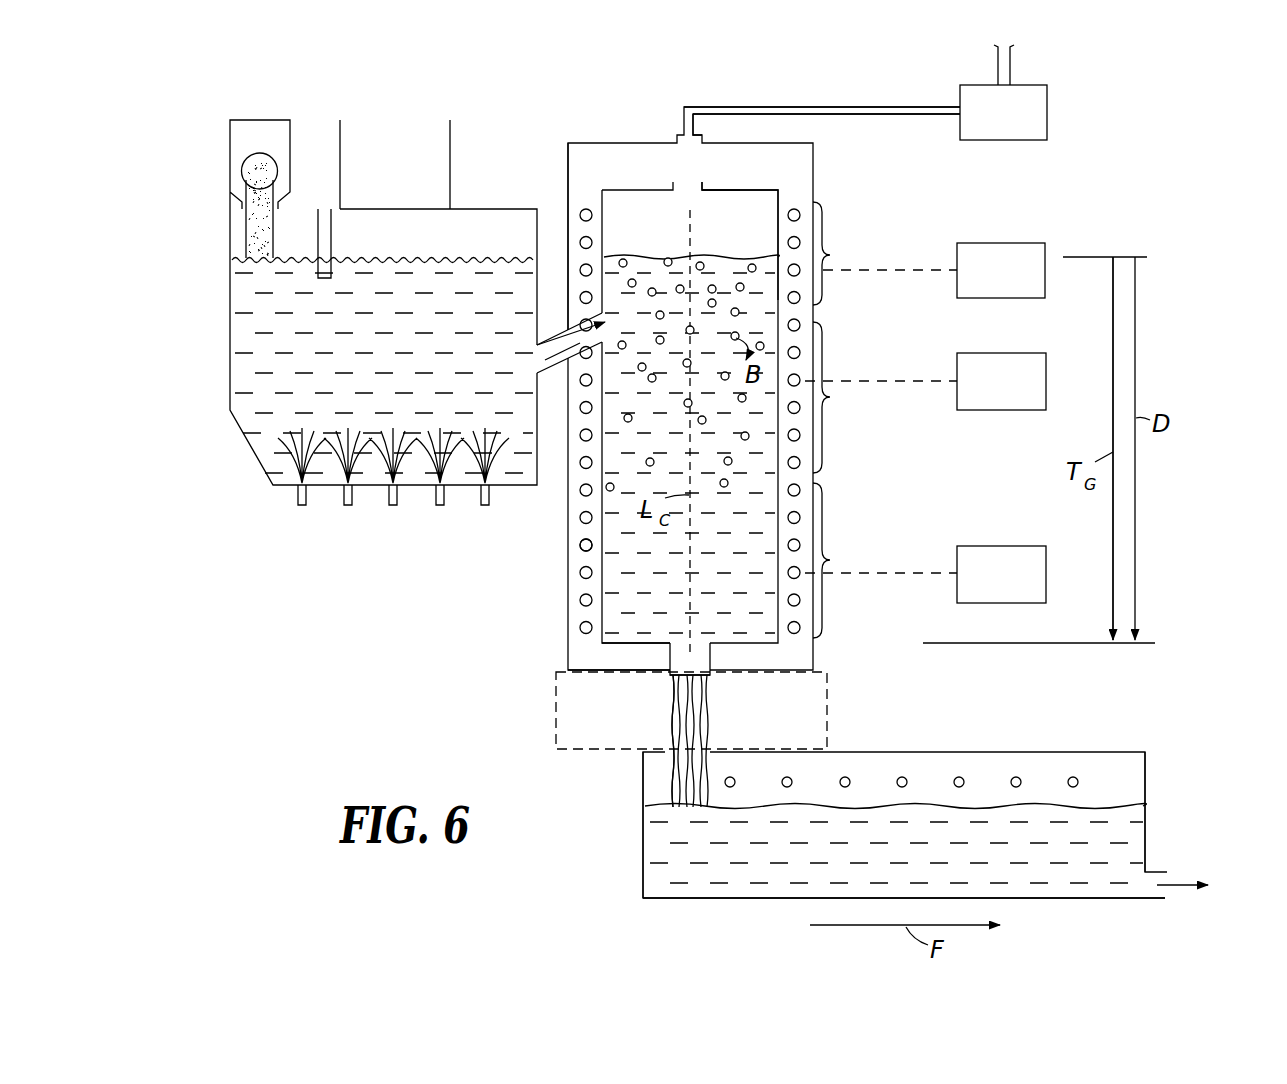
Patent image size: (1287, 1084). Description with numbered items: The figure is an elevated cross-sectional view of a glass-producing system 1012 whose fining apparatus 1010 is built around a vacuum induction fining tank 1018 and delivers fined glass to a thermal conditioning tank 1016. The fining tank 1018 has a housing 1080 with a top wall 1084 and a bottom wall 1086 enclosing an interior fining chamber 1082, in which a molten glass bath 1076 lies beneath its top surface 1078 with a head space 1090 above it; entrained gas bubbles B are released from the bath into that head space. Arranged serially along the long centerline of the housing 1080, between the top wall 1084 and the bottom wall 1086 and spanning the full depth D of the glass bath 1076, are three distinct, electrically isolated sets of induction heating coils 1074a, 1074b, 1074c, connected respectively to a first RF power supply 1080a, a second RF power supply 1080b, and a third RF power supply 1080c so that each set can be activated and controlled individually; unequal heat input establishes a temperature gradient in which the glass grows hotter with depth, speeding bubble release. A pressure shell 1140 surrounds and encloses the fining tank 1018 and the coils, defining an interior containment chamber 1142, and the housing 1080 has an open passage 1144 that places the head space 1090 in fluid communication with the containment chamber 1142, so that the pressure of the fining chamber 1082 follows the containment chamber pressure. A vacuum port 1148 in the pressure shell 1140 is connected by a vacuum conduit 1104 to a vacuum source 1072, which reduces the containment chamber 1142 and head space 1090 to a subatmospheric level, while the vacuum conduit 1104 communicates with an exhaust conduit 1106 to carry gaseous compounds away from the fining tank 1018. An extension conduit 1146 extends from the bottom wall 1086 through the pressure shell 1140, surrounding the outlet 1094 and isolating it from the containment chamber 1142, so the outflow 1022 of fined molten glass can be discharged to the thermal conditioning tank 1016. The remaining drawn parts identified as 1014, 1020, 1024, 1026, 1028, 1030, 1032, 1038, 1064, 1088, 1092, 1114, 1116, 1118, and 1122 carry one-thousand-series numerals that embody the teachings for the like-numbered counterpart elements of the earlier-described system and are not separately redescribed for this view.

The fining apparatus 1010 is at (729, 370).
The feed hopper 1012 is at (316, 86).
The first melting tank 1014 is at (213, 257).
The thermal conditioning tank 1016 is at (1017, 748).
The fining tank 1018 is at (785, 188).
The molten glass flow 1020 is at (582, 342).
The outflow 1022 is at (710, 713).
The outlet region 1024 is at (624, 707).
The transfer region 1026 is at (828, 736).
The glass outflow 1028 is at (1178, 886).
The raw material feed 1030 is at (257, 227).
The spout conduit 1032 is at (557, 350).
The molten glass in first tank 1038 is at (412, 366).
The burners 1064 is at (300, 502).
The vacuum source 1072 is at (1032, 124).
The first set of one or more induction heating coils 1074a is at (830, 255).
The second set of one or more induction heating coils 1074b is at (830, 397).
The third set of one or more induction heating coils 1074c is at (830, 560).
The molten glass bath 1076 is at (756, 597).
The top surface 1078 is at (655, 255).
The housing 1080 is at (694, 421).
The first RF power supply 1080a is at (1036, 283).
The second RF power supply 1080b is at (1036, 393).
The third RF power supply 1080c is at (1036, 586).
The interior fining chamber 1082 is at (778, 618).
The top wall 1084 is at (660, 190).
The bottom wall 1086 is at (634, 644).
The heating element column 1088 is at (785, 318).
The head space 1090 is at (635, 198).
The outer wall 1092 is at (618, 295).
The outlet 1094 is at (672, 689).
The vacuum conduit 1104 is at (735, 107).
The exhaust conduit 1106 is at (1012, 59).
The tank side wall 1114 is at (665, 754).
The tank bottom 1116 is at (1163, 898).
The molten glass in forming tank 1118 is at (930, 862).
The tank end wall 1122 is at (1118, 753).
The pressure shell 1140 is at (580, 520).
The interior containment chamber 1142 is at (580, 548).
The open passage 1144 is at (702, 190).
The extension conduit 1146 is at (670, 657).
The vacuum port 1148 is at (700, 147).